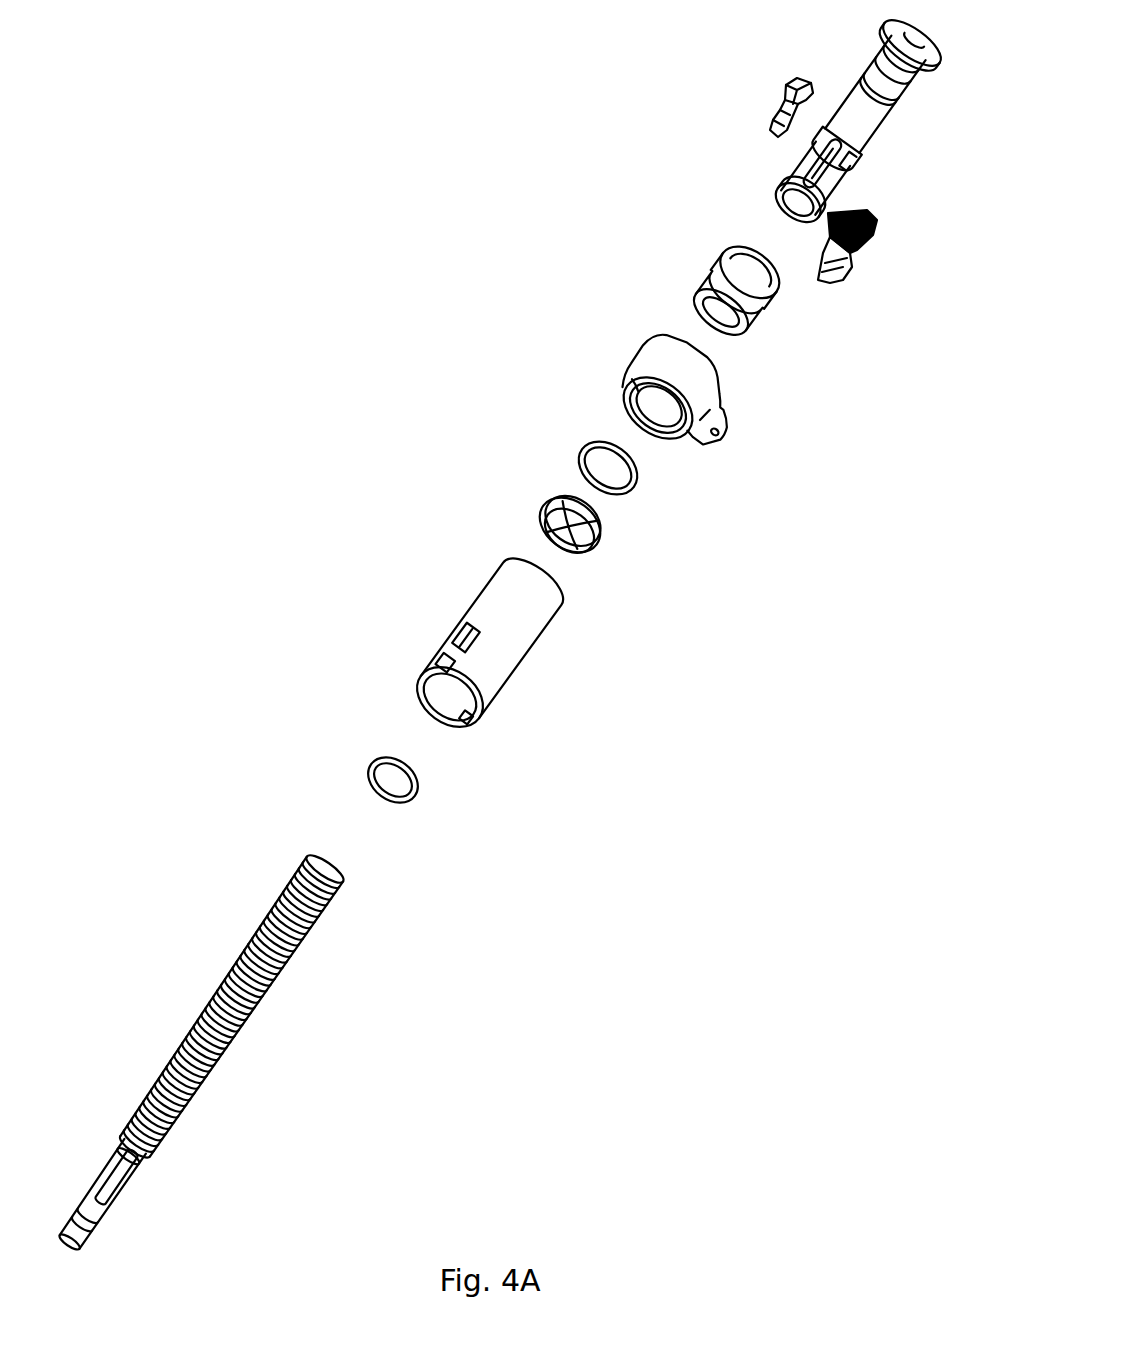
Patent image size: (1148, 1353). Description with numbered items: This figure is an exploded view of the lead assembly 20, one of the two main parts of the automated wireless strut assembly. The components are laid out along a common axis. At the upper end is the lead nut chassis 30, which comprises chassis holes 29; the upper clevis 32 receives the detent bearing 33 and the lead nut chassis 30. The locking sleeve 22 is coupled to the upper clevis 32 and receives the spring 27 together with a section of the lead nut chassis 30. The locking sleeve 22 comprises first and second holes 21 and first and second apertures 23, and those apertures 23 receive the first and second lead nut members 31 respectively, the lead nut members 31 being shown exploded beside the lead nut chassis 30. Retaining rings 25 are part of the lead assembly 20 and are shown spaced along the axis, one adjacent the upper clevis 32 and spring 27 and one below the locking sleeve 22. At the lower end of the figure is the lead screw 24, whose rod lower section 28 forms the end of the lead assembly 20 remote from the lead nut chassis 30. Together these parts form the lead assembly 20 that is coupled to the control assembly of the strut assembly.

The lead assembly 20 is at (95, 156).
The first and second holes 21 is at (462, 632).
The locking sleeve 22 is at (498, 592).
The first and second apertures 23 is at (440, 665).
The lead screw 24 is at (262, 1003).
The retaining rings 25 is at (585, 449).
The spring 27 is at (545, 500).
The rod lower section 28 is at (100, 1206).
The chassis holes 29 is at (807, 147).
The lead nut chassis 30 is at (870, 53).
The first and second lead nut members 31 is at (775, 105).
The upper clevis 32 is at (648, 356).
The detent bearing 33 is at (718, 267).